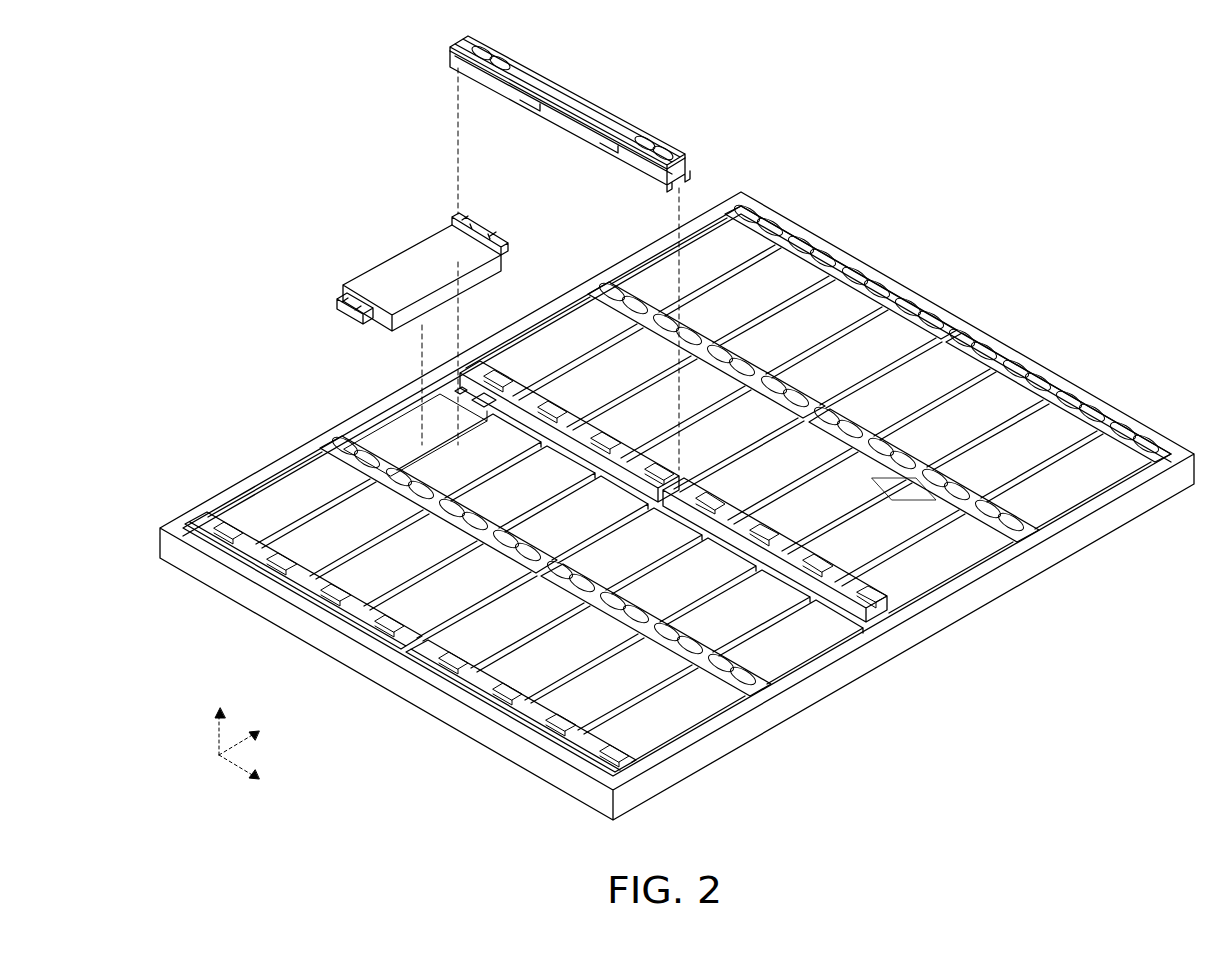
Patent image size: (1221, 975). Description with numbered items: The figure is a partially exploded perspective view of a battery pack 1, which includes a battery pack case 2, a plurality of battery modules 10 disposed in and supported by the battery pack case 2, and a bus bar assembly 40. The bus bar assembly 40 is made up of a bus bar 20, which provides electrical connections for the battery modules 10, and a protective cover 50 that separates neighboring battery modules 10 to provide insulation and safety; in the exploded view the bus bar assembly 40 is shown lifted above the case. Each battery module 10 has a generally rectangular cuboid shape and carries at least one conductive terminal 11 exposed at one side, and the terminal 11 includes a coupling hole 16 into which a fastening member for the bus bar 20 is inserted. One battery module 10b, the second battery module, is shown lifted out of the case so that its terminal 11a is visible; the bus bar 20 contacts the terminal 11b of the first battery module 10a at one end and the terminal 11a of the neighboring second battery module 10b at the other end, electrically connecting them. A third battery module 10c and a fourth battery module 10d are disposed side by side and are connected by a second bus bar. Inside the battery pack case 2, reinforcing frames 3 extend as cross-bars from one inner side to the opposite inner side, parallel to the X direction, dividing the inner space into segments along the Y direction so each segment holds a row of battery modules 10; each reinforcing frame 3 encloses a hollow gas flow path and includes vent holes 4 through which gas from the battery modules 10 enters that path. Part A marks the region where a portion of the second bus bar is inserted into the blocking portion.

The battery pack 1 is at (926, 114).
The battery pack case 2 is at (982, 597).
The reinforcing frame 3 is at (484, 400).
The vent hole 4 is at (458, 391).
The battery module 10 is at (273, 496).
The first battery module 10a is at (597, 330).
The second battery module 10b is at (396, 251).
The third battery module 10c is at (650, 362).
The fourth battery module 10d is at (703, 390).
The terminal 11 is at (569, 323).
The terminal of the second battery module 11a is at (464, 229).
The terminal of the first battery module 11b is at (513, 388).
The coupling hole 16 is at (355, 320).
The bus bar 20 is at (478, 36).
The bus bar assembly 40 is at (505, 98).
The protective cover 50 is at (442, 61).
The part A is at (957, 473).